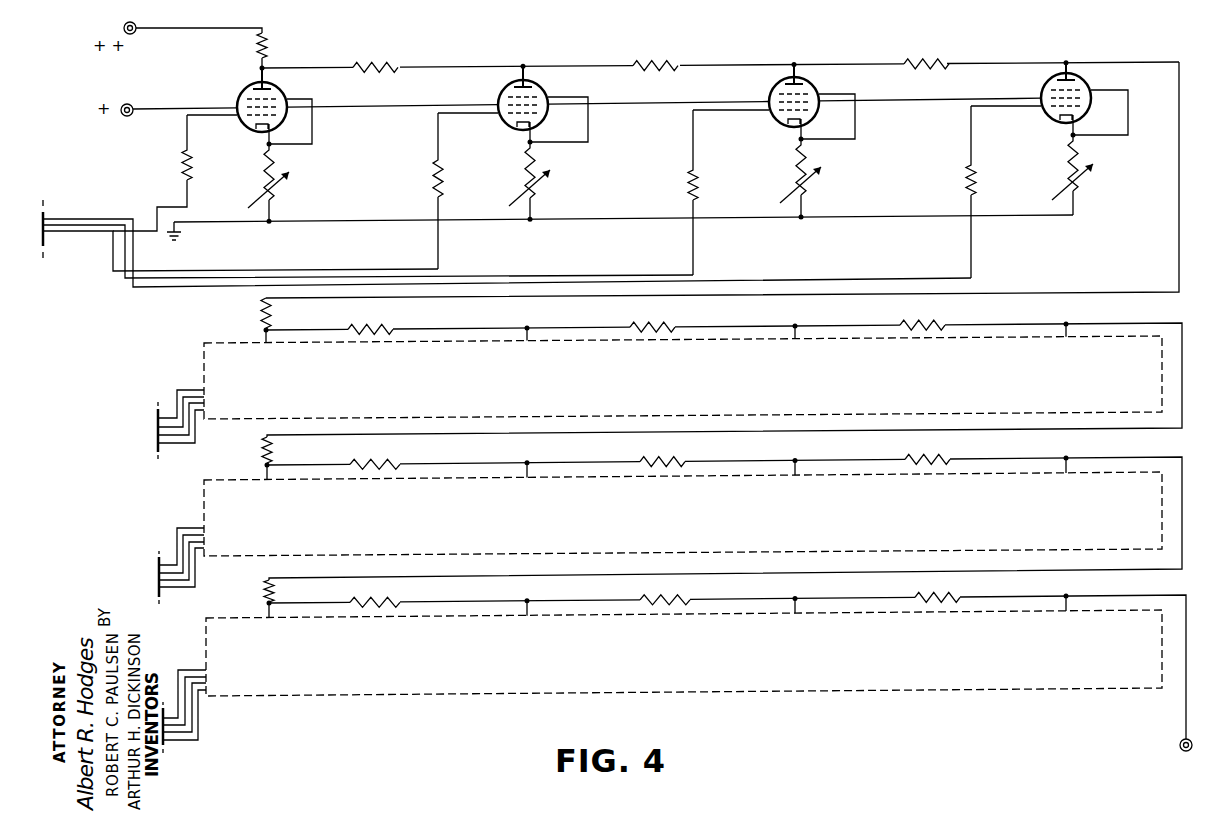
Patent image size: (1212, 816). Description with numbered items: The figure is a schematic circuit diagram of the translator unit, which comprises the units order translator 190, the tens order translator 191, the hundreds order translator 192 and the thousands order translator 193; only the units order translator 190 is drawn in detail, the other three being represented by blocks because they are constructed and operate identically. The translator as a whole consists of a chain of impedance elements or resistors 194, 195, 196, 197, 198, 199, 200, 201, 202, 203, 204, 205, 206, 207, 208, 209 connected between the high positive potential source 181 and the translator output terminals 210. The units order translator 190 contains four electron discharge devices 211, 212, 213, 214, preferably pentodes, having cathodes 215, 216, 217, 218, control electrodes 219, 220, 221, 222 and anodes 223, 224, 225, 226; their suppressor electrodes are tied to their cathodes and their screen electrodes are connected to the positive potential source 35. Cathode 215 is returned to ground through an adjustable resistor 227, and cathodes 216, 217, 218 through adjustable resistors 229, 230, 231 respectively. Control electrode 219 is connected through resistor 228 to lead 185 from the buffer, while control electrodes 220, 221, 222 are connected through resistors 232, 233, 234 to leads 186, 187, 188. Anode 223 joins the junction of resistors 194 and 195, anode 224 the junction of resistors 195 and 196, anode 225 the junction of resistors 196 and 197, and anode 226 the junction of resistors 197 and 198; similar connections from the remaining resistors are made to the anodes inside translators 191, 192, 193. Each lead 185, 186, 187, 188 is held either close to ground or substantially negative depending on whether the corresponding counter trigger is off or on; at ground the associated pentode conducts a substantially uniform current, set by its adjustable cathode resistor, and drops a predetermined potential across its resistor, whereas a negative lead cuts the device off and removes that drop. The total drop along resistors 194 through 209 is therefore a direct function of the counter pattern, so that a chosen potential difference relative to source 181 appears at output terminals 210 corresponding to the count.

The positive potential source 35 is at (132, 117).
The high positive potential source 181 is at (138, 33).
The lead 185 is at (80, 236).
The lead 186 is at (115, 245).
The lead 187 is at (140, 284).
The lead 188 is at (108, 218).
The units order translator 190 is at (592, 50).
The tens order translator 191 is at (625, 391).
The hundreds order translator 192 is at (625, 526).
The thousands order translator 193 is at (650, 665).
The resistor 194 is at (256, 45).
The resistor 195 is at (368, 78).
The resistor 196 is at (657, 72).
The resistor 197 is at (930, 70).
The resistor 198 is at (260, 310).
The resistor 199 is at (362, 324).
The resistor 200 is at (665, 323).
The resistor 201 is at (930, 321).
The resistor 202 is at (262, 449).
The resistor 203 is at (385, 462).
The resistor 204 is at (680, 460).
The resistor 205 is at (945, 458).
The resistor 206 is at (266, 580).
The resistor 207 is at (395, 601).
The resistor 208 is at (680, 598).
The resistor 209 is at (955, 596).
The translator output terminals 210 is at (1180, 743).
The electron discharge device 211 is at (239, 99).
The electron discharge device 212 is at (506, 87).
The electron discharge device 213 is at (769, 86).
The electron discharge device 214 is at (1041, 90).
The cathode 215 is at (260, 134).
The cathode 216 is at (524, 131).
The cathode 217 is at (790, 132).
The cathode 218 is at (1065, 128).
The control electrode 219 is at (287, 122).
The control electrode 220 is at (544, 116).
The control electrode 221 is at (811, 113).
The control electrode 222 is at (1086, 114).
The anode 223 is at (257, 82).
The anode 224 is at (537, 82).
The anode 225 is at (810, 82).
The anode 226 is at (1080, 79).
The adjustable resistor 227 is at (276, 156).
The resistor 228 is at (182, 162).
The adjustable resistor 229 is at (541, 158).
The adjustable resistor 230 is at (810, 152).
The adjustable resistor 231 is at (1081, 156).
The resistor 232 is at (435, 184).
The resistor 233 is at (688, 188).
The resistor 234 is at (960, 178).